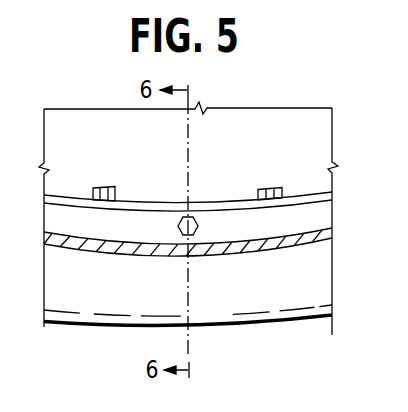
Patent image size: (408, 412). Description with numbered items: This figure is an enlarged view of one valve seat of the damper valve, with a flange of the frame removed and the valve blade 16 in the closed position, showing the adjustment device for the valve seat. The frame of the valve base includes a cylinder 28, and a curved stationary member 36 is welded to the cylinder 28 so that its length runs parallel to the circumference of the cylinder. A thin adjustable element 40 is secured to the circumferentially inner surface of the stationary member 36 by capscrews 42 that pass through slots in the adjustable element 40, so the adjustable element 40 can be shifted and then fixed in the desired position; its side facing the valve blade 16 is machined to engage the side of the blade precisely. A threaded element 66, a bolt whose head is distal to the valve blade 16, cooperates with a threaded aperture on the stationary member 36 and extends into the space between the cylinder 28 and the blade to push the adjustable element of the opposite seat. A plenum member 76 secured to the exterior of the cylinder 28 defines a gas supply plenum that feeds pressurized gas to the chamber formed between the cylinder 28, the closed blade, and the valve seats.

The valve blade 16 is at (281, 117).
The cylinder 28 is at (336, 230).
The stationary member 36 is at (93, 230).
The adjustable element 40 is at (237, 201).
The capscrew 42 is at (267, 199).
The threaded element 66 is at (181, 232).
The plenum member 76 is at (322, 279).